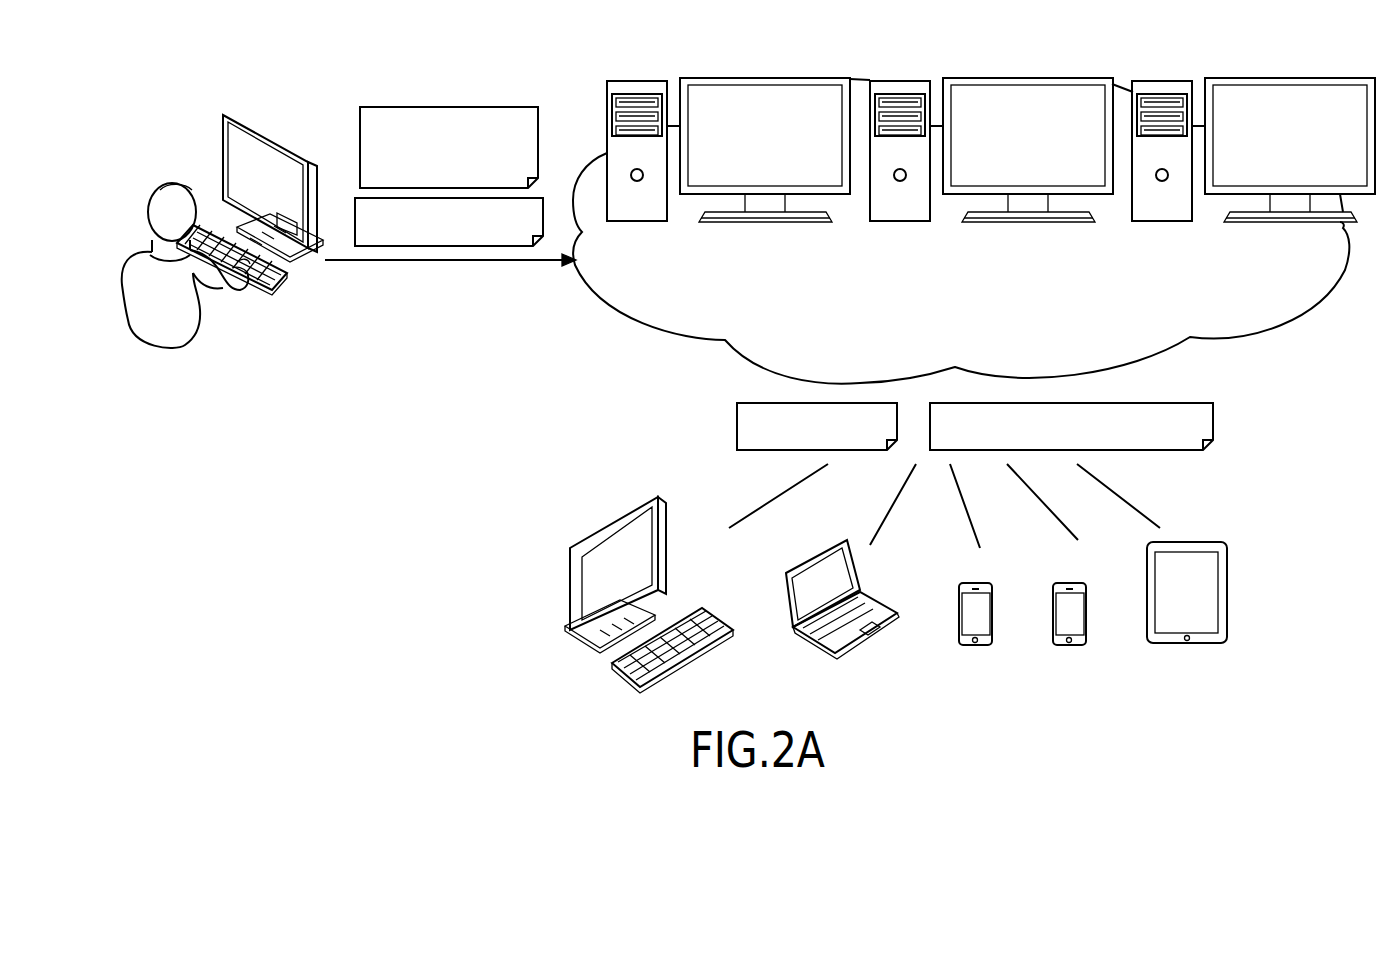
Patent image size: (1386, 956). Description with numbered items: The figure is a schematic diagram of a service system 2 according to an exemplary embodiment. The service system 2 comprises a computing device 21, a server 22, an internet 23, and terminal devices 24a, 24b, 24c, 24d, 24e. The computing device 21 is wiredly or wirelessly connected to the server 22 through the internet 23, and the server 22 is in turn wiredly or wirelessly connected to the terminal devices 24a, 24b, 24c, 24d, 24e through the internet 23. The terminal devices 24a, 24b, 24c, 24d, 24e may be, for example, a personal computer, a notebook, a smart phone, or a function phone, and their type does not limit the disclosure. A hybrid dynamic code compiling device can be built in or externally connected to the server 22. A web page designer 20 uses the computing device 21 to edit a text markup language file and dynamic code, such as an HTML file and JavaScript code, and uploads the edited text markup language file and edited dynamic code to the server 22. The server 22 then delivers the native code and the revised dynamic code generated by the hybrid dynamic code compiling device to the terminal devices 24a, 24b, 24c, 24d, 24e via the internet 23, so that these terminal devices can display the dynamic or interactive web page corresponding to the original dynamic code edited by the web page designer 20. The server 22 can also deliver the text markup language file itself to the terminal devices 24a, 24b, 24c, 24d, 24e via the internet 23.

The service system 2 is at (301, 17).
The web page designer 20 is at (152, 197).
The computing device 21 is at (218, 153).
The server 22 is at (1163, 80).
The internet 23 is at (1310, 317).
The terminal device 24a is at (592, 642).
The terminal device 24b is at (812, 643).
The terminal device 24c is at (976, 645).
The terminal device 24d is at (1069, 645).
The terminal device 24e is at (1178, 643).